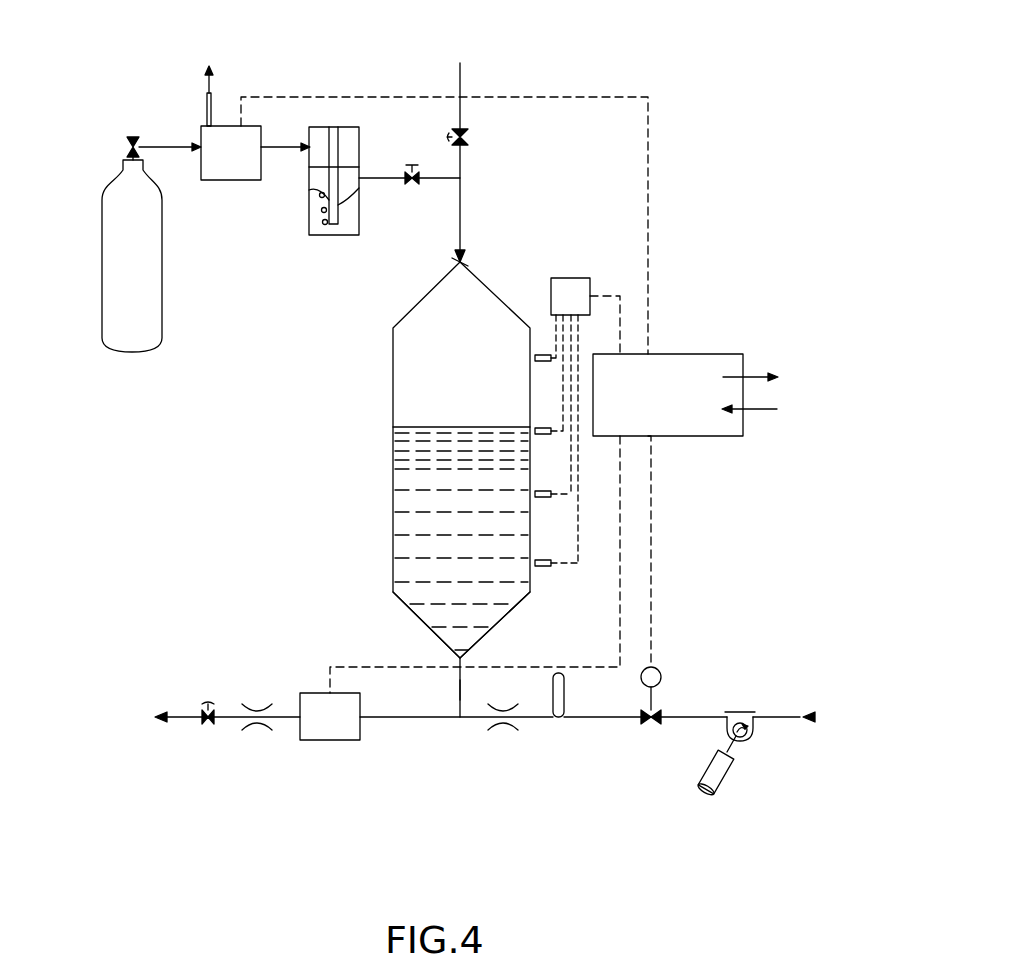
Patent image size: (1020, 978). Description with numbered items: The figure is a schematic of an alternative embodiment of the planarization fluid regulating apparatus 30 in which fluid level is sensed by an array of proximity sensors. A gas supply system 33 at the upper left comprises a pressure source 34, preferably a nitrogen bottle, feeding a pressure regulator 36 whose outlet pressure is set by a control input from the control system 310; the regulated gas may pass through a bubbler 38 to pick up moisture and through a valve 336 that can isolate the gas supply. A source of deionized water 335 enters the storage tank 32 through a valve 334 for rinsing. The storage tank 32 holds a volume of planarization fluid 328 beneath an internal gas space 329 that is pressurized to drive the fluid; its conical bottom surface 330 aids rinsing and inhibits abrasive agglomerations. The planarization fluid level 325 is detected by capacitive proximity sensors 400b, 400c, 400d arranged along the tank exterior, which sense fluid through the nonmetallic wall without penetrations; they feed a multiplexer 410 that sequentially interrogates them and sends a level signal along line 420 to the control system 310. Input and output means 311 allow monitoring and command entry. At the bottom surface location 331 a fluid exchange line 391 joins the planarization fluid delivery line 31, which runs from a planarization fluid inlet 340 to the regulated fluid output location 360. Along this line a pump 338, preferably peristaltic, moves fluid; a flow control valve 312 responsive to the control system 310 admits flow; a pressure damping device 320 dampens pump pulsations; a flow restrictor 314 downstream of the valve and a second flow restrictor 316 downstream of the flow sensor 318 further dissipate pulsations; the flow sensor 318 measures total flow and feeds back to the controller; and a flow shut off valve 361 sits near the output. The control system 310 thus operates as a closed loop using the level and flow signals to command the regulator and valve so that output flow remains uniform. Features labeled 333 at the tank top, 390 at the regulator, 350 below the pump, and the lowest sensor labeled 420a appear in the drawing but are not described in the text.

The planarization fluid regulating apparatus 30 is at (688, 60).
The planarization fluid delivery line 31 is at (842, 788).
The storage tank 32 is at (418, 298).
The gas supply system 33 is at (357, 355).
The pressure source 34 is at (144, 280).
The pressure regulator 36 is at (243, 167).
The bubbler 38 is at (309, 185).
The control system 310 is at (684, 405).
The input and output means 311 is at (787, 362).
The flow control valve 312 is at (655, 698).
The flow restrictor 314 is at (485, 727).
The flow restrictor 316 is at (248, 730).
The flow sensor 318 is at (346, 727).
The pressure damping device 320 is at (566, 688).
The planarization fluid level 325 is at (402, 427).
The planarization fluid 328 is at (478, 521).
The internal gas space 329 is at (443, 367).
The conical bottom surface 330 is at (505, 620).
The bottom surface location 331 is at (466, 660).
The inlet 333 is at (452, 258).
The valve 334 is at (470, 134).
The source of deionized water 335 is at (459, 149).
The valve 336 is at (416, 186).
The pump 338 is at (735, 710).
The planarization fluid inlet 340 is at (827, 717).
The sample container 350 is at (740, 762).
The regulated fluid output location 360 is at (139, 717).
The flow shut off valve 361 is at (212, 705).
The vent 390 is at (207, 100).
The fluid exchange line 391 is at (457, 690).
The proximity sensor 400b is at (542, 490).
The proximity sensor 400c is at (542, 427).
The proximity sensor 400d is at (542, 354).
The multiplexer 410 is at (586, 308).
The line 420 is at (618, 306).
The level sensor 420a is at (542, 559).